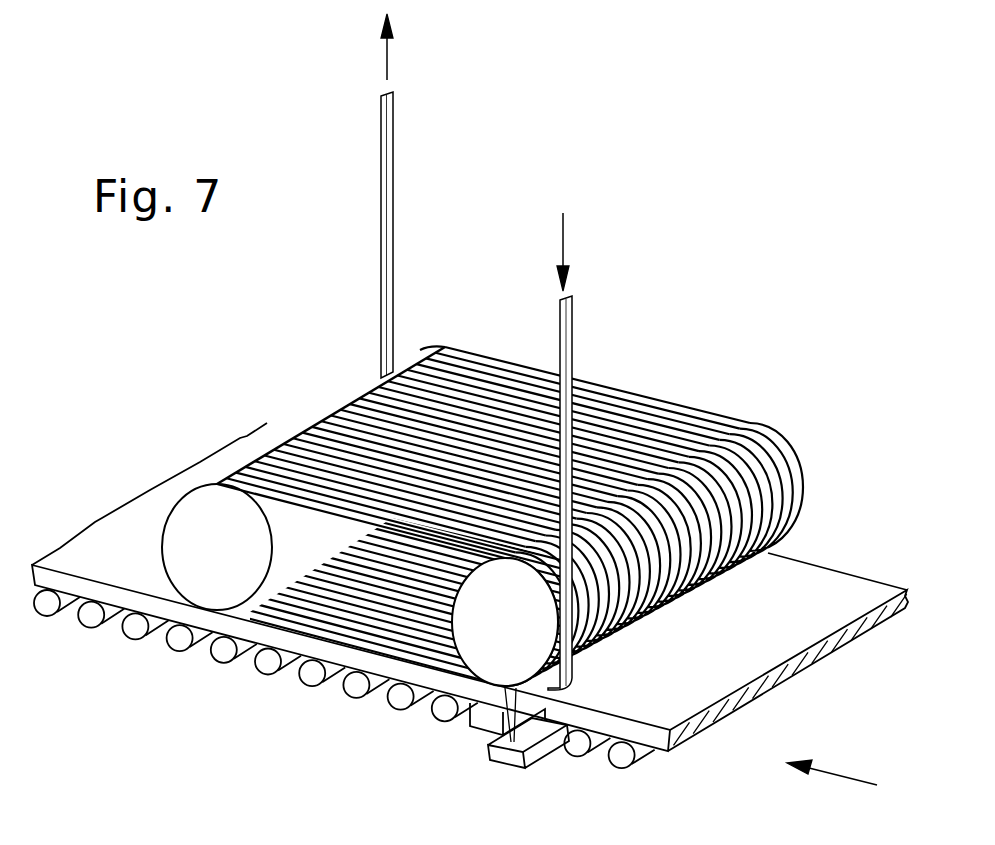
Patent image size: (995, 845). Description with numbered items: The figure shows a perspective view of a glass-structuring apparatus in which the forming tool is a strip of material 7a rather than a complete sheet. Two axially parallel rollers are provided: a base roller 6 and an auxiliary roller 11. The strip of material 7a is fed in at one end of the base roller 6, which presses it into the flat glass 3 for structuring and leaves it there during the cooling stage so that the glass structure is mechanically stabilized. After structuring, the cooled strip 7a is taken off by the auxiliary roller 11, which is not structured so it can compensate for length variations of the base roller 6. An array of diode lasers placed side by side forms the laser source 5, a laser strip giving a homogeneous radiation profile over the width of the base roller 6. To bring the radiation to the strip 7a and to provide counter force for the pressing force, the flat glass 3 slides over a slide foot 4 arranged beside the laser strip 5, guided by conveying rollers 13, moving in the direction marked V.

The flat glass 3 is at (88, 543).
The slide foot 4 is at (487, 720).
The laser source 5 is at (513, 757).
The base roller 6 is at (533, 655).
The strip of material 7a is at (570, 340).
The auxiliary roller 11 is at (188, 518).
The conveying rollers 13 is at (270, 668).
The direction of movement V is at (846, 778).